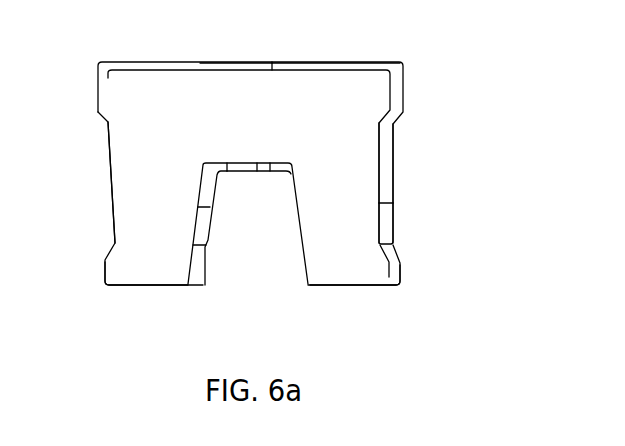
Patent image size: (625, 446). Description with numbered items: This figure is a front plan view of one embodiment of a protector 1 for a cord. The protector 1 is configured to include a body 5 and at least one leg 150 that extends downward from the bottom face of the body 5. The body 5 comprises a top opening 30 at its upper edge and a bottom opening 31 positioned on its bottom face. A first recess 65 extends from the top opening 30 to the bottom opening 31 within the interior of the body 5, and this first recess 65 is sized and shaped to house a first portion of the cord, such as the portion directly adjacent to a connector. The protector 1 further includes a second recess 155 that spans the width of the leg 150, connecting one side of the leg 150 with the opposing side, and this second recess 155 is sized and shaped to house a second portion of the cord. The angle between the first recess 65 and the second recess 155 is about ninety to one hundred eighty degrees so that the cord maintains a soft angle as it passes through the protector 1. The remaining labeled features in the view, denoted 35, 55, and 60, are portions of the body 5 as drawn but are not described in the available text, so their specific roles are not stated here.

The protector 1 is at (179, 37).
The body 5 is at (163, 102).
The top opening 30 is at (252, 68).
The top wall second portion 35 is at (295, 66).
The first side wall 55 is at (112, 163).
The second side wall 60 is at (394, 170).
The first recess 65 is at (383, 228).
The bottom opening 31 is at (253, 172).
The second recess 155 is at (203, 217).
The leg 150 is at (162, 263).